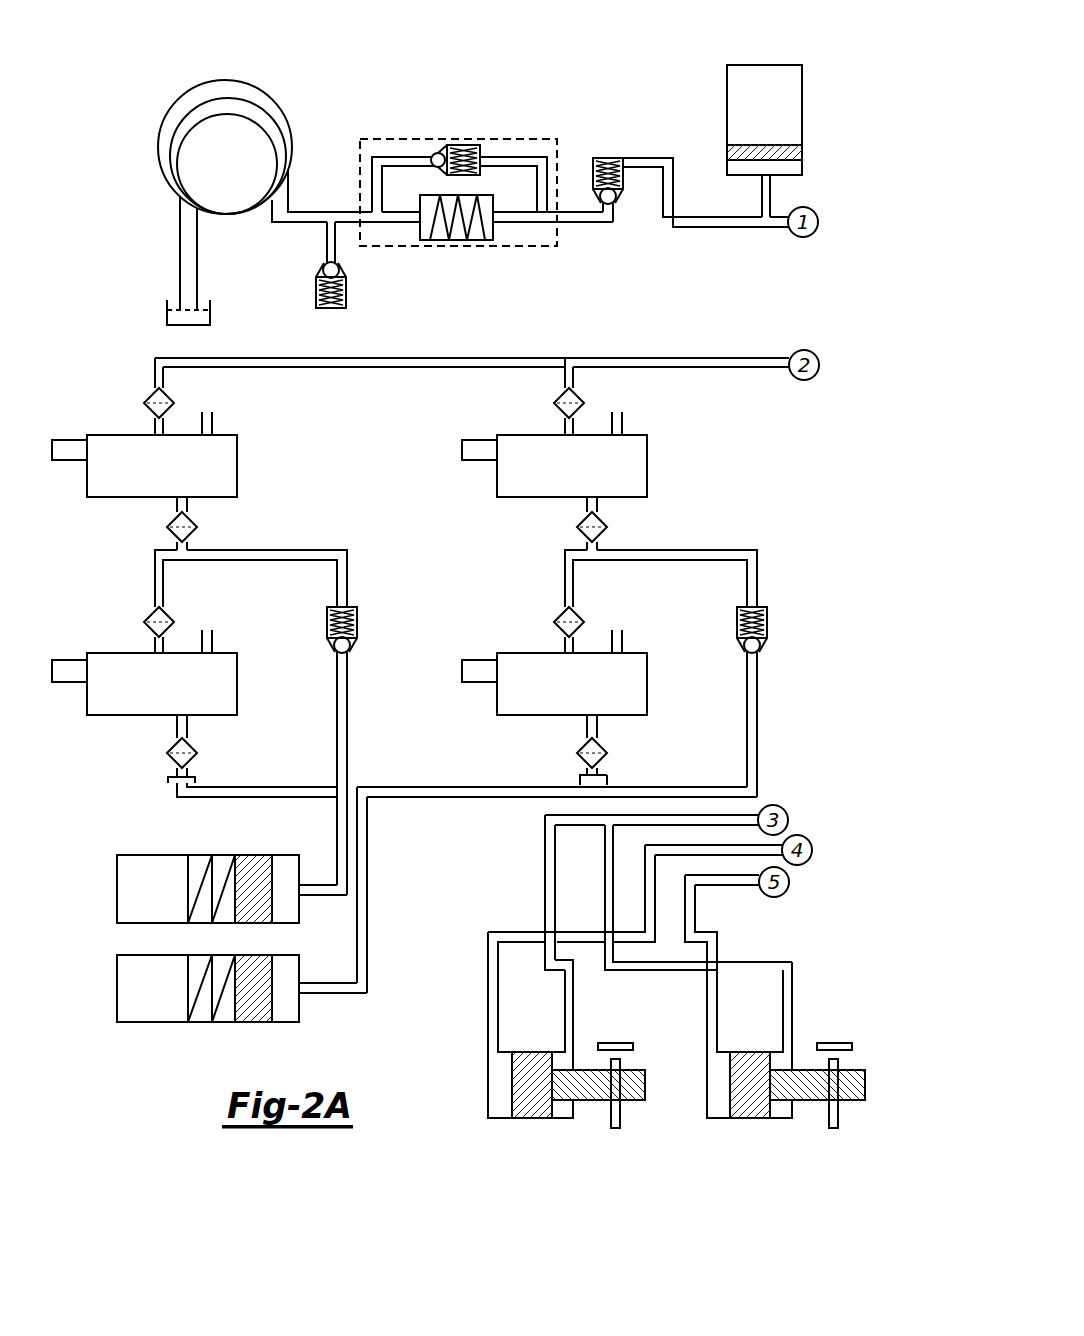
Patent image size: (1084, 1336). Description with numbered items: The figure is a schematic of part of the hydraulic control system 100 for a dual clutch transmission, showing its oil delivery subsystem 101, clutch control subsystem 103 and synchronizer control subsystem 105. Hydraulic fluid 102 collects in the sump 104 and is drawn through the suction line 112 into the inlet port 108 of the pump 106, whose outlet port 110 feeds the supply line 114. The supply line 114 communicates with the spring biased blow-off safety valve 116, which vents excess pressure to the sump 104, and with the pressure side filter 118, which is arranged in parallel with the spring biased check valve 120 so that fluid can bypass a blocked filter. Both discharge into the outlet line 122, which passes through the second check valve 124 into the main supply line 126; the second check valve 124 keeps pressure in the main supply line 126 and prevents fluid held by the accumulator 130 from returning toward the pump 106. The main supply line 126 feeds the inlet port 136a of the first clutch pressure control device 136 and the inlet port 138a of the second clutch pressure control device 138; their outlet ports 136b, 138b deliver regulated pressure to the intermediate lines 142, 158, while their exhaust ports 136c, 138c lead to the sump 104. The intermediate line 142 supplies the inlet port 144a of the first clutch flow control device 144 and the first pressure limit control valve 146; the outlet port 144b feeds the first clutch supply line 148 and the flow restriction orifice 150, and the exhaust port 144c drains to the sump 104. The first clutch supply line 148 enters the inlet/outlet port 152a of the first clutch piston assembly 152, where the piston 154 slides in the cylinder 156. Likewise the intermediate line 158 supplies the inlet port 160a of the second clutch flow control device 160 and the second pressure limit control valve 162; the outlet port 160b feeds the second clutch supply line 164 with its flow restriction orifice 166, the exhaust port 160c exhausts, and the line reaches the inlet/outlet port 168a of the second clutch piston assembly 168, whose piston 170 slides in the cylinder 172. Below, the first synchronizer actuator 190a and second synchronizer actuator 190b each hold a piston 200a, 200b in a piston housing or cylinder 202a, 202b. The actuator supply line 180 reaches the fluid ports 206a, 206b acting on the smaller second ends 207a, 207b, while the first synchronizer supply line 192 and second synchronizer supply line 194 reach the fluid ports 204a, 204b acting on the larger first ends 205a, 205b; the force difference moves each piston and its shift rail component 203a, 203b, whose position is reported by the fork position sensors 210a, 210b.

The hydraulic control system 100 is at (160, 64).
The oil delivery subsystem 101 is at (652, 75).
The hydraulic fluid 102 is at (207, 300).
The clutch control subsystem 103 is at (98, 783).
The sump 104 is at (167, 313).
The synchronizer control subsystem 105 is at (827, 785).
The pump 106 is at (272, 110).
The inlet port 108 is at (190, 207).
The outlet port 110 is at (290, 190).
The suction line 112 is at (187, 263).
The supply line 114 is at (300, 223).
The spring biased blow-off safety valve 116 is at (347, 288).
The pressure side filter 118 is at (473, 240).
The spring biased check valve 120 is at (460, 143).
The outlet line 122 is at (577, 223).
The second check valve 124 is at (625, 190).
The main supply line 126 is at (727, 227).
The accumulator 130 is at (780, 80).
The first clutch pressure control device 136 is at (238, 452).
The inlet port 136a is at (157, 430).
The outlet port 136b is at (180, 500).
The exhaust port 136c is at (210, 422).
The second clutch pressure control device 138 is at (648, 468).
The inlet port 138a is at (567, 430).
The outlet port 138b is at (590, 500).
The exhaust port 138c is at (620, 422).
The intermediate line 142 is at (283, 548).
The first clutch flow control device 144 is at (238, 672).
The inlet port 144a is at (157, 647).
The outlet port 144b is at (182, 718).
The exhaust port 144c is at (210, 640).
The first pressure limit control valve 146 is at (358, 632).
The first clutch supply line 148 is at (283, 785).
The flow restriction orifice 150 is at (168, 778).
The first clutch piston assembly 152 is at (117, 895).
The inlet/outlet port 152a is at (302, 890).
The piston 154 is at (257, 907).
The cylinder 156 is at (302, 870).
The intermediate line 158 is at (697, 548).
The second clutch flow control device 160 is at (650, 685).
The inlet port 160a is at (567, 647).
The outlet port 160b is at (592, 720).
The exhaust port 160c is at (620, 640).
The second pressure limit control valve 162 is at (768, 633).
The second clutch supply line 164 is at (590, 773).
The flow restriction orifice 166 is at (608, 777).
The second clutch piston assembly 168 is at (117, 997).
The inlet/outlet port 168a is at (303, 990).
The piston 170 is at (257, 965).
The cylinder 172 is at (275, 1012).
The actuator supply line 180 is at (545, 850).
The first synchronizer actuator 190a is at (534, 1135).
The second synchronizer actuator 190b is at (758, 1135).
The first synchronizer supply line 192 is at (657, 888).
The second synchronizer supply line 194 is at (717, 947).
The piston 200a is at (525, 1077).
The piston 200b is at (743, 1072).
The piston housing or cylinder 202a is at (500, 1108).
The piston housing or cylinder 202b is at (720, 1118).
The shift rail component 203a is at (623, 1117).
The shift rail component 203b is at (842, 1117).
The fluid port 204a is at (497, 1050).
The fluid port 204b is at (715, 1052).
The first end 205a is at (512, 1087).
The first end 205b is at (730, 1090).
The fluid port 206a is at (568, 1043).
The fluid port 206b is at (787, 1043).
The second end 207a is at (553, 1108).
The second end 207b is at (770, 1108).
The fork position sensor 210a is at (637, 1043).
The fork position sensor 210b is at (845, 1043).